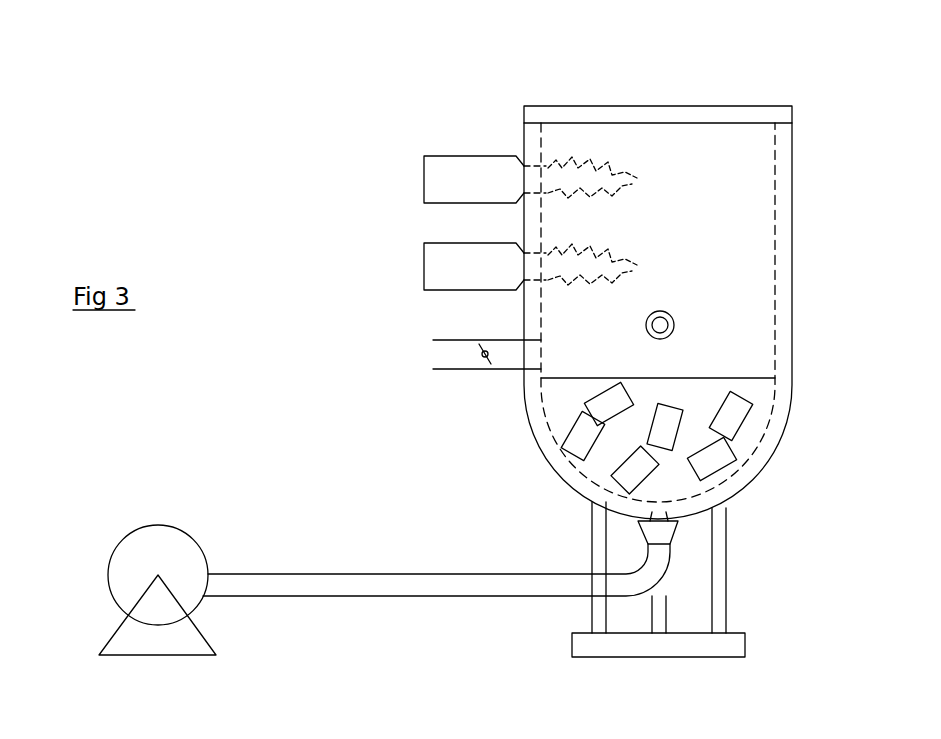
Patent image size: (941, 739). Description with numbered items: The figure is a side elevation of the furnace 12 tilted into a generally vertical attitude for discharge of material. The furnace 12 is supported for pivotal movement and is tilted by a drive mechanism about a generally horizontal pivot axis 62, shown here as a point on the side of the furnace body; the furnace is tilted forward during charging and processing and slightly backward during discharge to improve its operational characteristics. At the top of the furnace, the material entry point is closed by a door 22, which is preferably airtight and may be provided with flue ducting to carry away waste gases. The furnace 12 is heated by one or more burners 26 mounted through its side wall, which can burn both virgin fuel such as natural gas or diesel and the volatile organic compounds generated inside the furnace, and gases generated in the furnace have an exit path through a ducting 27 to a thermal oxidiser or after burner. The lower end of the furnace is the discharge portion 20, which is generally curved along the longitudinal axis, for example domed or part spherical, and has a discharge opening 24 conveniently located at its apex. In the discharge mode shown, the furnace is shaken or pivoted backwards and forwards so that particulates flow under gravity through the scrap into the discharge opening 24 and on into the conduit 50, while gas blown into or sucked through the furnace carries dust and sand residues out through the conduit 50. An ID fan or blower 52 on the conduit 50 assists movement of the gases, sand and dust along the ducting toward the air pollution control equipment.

The furnace 12 is at (788, 178).
The door 22 is at (650, 116).
The burners 26 is at (450, 180).
The ducting 27 is at (445, 355).
The pivot axis 62 is at (665, 322).
The discharge opening 24 is at (655, 512).
The discharge portion 20 is at (698, 503).
The conduit 50 is at (305, 585).
The ID fan or blower 52 is at (158, 548).